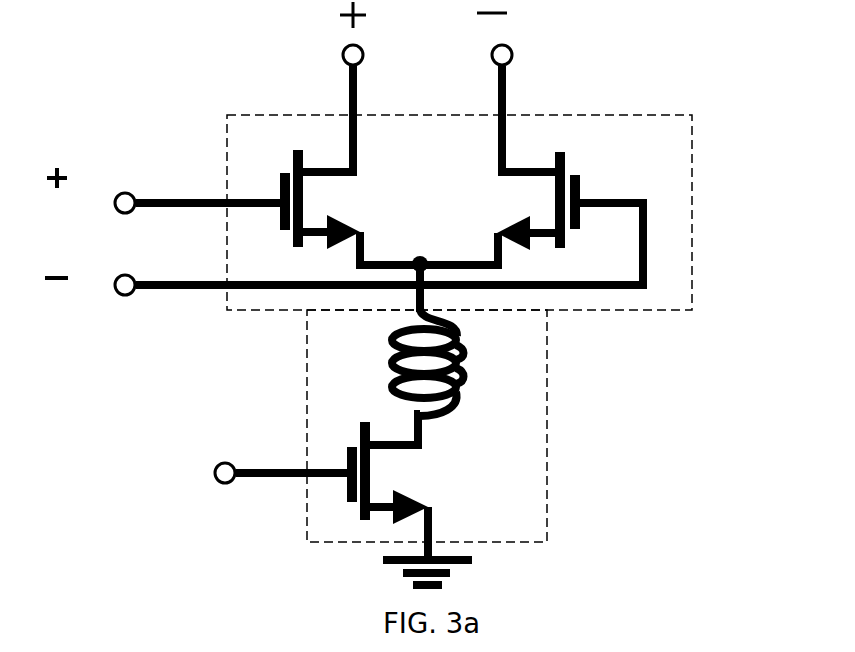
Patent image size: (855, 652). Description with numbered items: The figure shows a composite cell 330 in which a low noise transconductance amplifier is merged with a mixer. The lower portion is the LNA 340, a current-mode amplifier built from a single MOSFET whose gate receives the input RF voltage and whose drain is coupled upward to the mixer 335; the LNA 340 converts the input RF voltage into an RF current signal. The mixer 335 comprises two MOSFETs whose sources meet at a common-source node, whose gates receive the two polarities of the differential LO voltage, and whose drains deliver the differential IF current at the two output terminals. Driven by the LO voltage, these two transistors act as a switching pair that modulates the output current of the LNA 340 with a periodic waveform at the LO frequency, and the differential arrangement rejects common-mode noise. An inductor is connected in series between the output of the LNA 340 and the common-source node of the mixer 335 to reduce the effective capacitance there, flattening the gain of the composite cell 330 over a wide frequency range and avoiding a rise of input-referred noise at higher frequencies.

The composite cell 330 is at (707, 50).
The mixer 335 is at (692, 200).
The LNA 340 is at (546, 485).